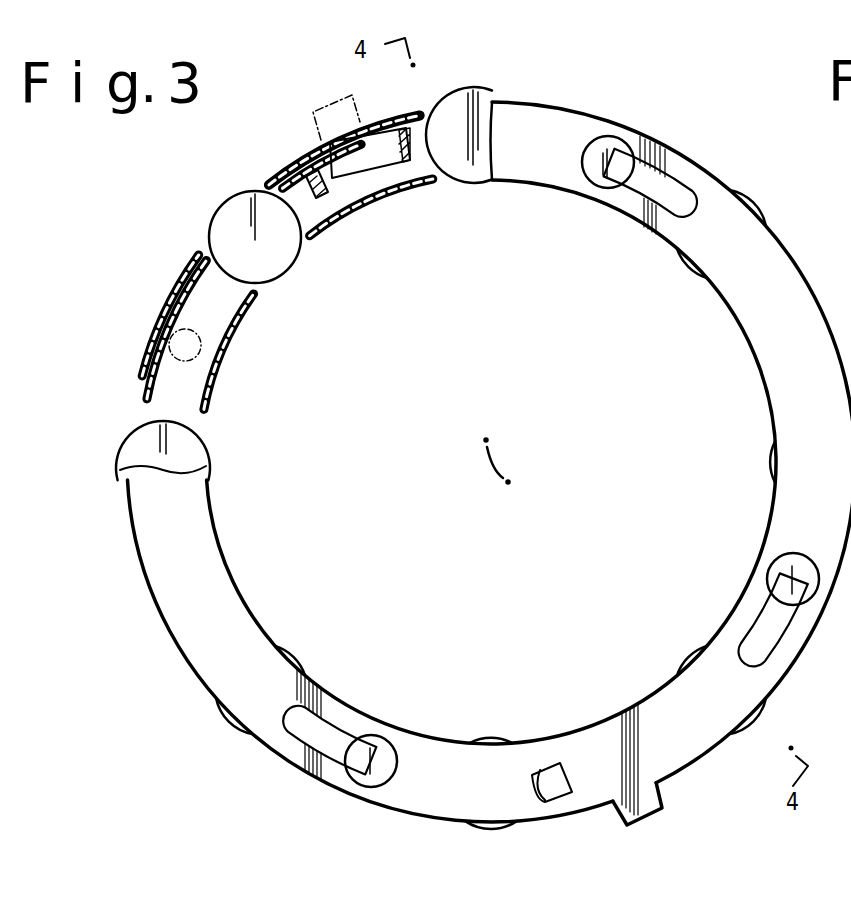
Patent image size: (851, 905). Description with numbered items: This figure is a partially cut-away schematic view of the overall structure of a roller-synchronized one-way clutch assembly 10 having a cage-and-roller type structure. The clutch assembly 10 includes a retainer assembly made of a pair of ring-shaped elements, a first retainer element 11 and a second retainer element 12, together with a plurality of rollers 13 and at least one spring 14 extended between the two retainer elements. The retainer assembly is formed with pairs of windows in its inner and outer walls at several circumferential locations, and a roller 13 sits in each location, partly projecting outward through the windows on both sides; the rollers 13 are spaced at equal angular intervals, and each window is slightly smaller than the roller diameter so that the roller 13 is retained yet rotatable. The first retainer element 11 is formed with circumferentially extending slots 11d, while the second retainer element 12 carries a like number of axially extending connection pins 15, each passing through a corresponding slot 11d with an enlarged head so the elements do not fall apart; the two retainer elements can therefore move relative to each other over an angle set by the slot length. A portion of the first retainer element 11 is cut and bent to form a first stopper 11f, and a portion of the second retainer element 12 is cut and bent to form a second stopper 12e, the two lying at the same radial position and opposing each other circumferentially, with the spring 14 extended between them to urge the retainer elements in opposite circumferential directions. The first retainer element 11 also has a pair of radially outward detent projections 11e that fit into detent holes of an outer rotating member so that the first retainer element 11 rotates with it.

The roller-synchronized one-way clutch assembly 10 is at (600, 78).
The first retainer element 11 is at (163, 298).
The slots 11d is at (668, 168).
The detent projections 11e is at (667, 800).
The first stopper 11f is at (397, 114).
The second retainer element 12 is at (210, 400).
The second stopper 12e is at (310, 186).
The rollers 13 is at (300, 240).
The spring 14 is at (320, 152).
The connection pins 15 is at (612, 142).